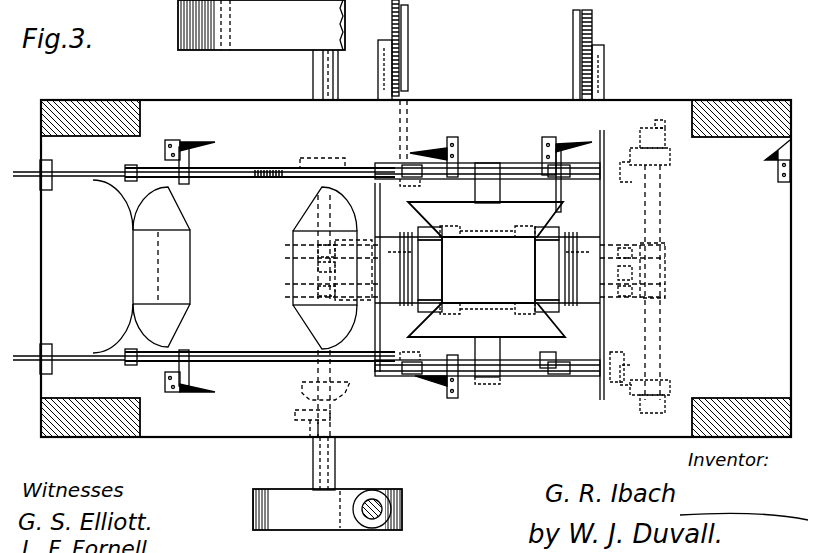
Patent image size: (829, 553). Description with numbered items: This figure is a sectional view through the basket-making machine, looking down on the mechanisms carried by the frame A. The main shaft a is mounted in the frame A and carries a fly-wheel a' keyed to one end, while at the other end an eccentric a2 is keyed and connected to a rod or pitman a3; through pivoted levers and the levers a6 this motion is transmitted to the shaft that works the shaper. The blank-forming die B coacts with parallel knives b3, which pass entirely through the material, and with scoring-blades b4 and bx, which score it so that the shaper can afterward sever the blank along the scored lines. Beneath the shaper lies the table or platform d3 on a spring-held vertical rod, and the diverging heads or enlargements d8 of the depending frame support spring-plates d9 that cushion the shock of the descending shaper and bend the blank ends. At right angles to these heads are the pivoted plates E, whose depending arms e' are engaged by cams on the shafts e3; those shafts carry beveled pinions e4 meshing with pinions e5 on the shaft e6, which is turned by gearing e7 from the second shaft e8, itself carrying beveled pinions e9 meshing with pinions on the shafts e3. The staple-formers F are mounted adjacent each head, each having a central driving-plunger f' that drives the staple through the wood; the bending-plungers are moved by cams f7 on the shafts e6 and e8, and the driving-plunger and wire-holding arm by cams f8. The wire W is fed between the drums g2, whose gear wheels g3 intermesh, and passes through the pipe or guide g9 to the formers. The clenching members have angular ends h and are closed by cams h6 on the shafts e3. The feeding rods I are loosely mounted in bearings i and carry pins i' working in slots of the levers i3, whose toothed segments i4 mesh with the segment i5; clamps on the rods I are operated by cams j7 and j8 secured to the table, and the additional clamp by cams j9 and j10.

The frame A is at (105, 105).
The main shaft a is at (334, 463).
The fly-wheel a' is at (241, 50).
The eccentric a2 is at (311, 509).
The rod or pitman a3 is at (392, 510).
The levers a6 is at (470, 6).
The blank-forming die B is at (225, 266).
The parallel knives b3 is at (330, 314).
The scoring-blades b4 is at (270, 210).
The scoring-blades bx is at (133, 262).
The table or platform d3 is at (488, 270).
The heads or enlargements d8 is at (418, 232).
The spring-plates d9 is at (535, 248).
The pivoted plates E is at (486, 269).
The depending arms e' is at (500, 273).
The shafts e3 is at (504, 166).
The beveled pinions e4 is at (628, 188).
The beveled pinions e5 is at (670, 158).
The shaft e6 is at (645, 228).
The gearing e7 is at (292, 425).
The second shaft e8 is at (318, 375).
The beveled pinions e9 is at (328, 394).
The staple-formers F is at (382, 306).
The central driving-plunger f' is at (481, 269).
The cams f7 is at (674, 288).
The cams f8 is at (318, 266).
The drums g2 is at (409, 40).
The gear wheels or pinions g3 is at (392, 26).
The pipe or guide g9 is at (578, 182).
The angular ends h is at (491, 70).
The cams h6 is at (404, 150).
The horizontal rods I is at (97, 178).
The bearings i is at (221, 260).
The pins i' is at (130, 251).
The pivotally-mounted levers i3 is at (218, 168).
The toothed segments i4 is at (268, 168).
The toothed segment i5 is at (314, 160).
The cam j7 is at (186, 142).
The cam j8 is at (450, 140).
The cam j9 is at (550, 138).
The cam j10 is at (768, 168).
The wire W is at (416, 98).